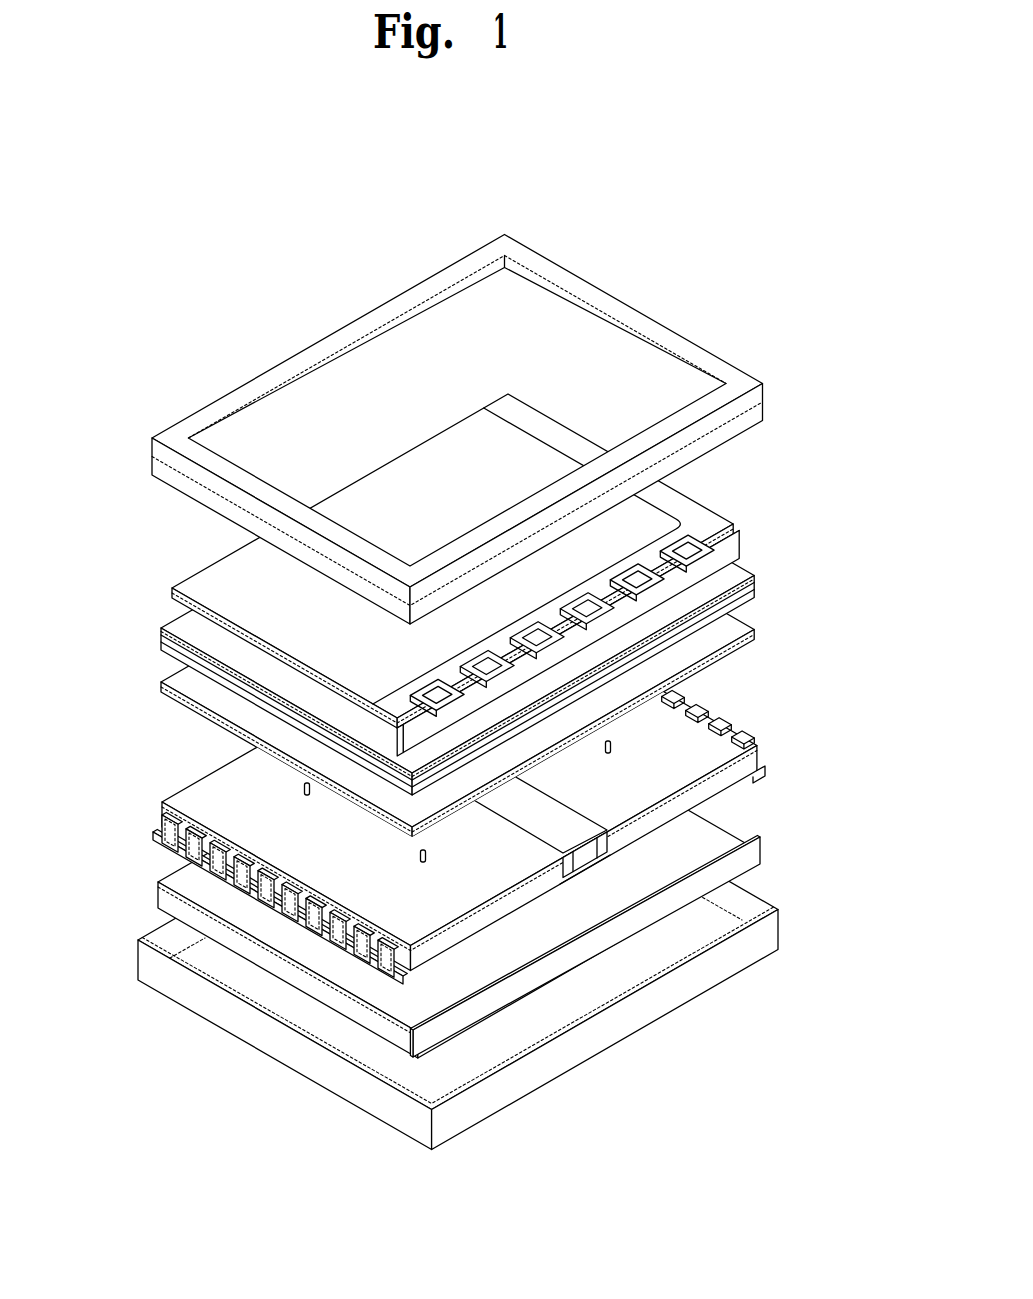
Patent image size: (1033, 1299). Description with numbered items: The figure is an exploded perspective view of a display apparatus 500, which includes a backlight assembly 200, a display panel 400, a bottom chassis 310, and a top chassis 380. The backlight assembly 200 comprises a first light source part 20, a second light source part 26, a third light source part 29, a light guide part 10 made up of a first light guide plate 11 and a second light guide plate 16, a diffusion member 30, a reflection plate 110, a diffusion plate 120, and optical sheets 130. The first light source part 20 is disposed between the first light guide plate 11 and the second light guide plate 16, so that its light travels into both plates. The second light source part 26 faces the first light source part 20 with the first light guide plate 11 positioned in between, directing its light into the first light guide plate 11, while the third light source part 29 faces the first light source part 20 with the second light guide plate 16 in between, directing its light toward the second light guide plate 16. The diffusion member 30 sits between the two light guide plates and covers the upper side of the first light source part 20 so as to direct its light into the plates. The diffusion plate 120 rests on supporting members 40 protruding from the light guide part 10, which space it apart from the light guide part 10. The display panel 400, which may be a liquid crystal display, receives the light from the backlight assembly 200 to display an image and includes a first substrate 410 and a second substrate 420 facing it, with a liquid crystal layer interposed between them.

The display apparatus 500 is at (450, 682).
The top chassis 380 is at (185, 420).
The display panel 400 is at (520, 575).
The first substrate 410 is at (697, 513).
The second substrate 420 is at (658, 521).
The backlight assembly 200 is at (405, 790).
The optical sheets 130 is at (418, 613).
The diffusion plate 120 is at (177, 675).
The reflection plate 110 is at (160, 875).
The bottom chassis 310 is at (155, 928).
The light guide part 10 is at (461, 875).
The first light guide plate 11 is at (503, 918).
The second light guide plate 16 is at (653, 838).
The first light source part 20 is at (593, 886).
The diffusion member 30 is at (566, 822).
The second light source part 26 is at (377, 978).
The supporting members 40 is at (302, 790).
The third light source part 29 is at (778, 763).